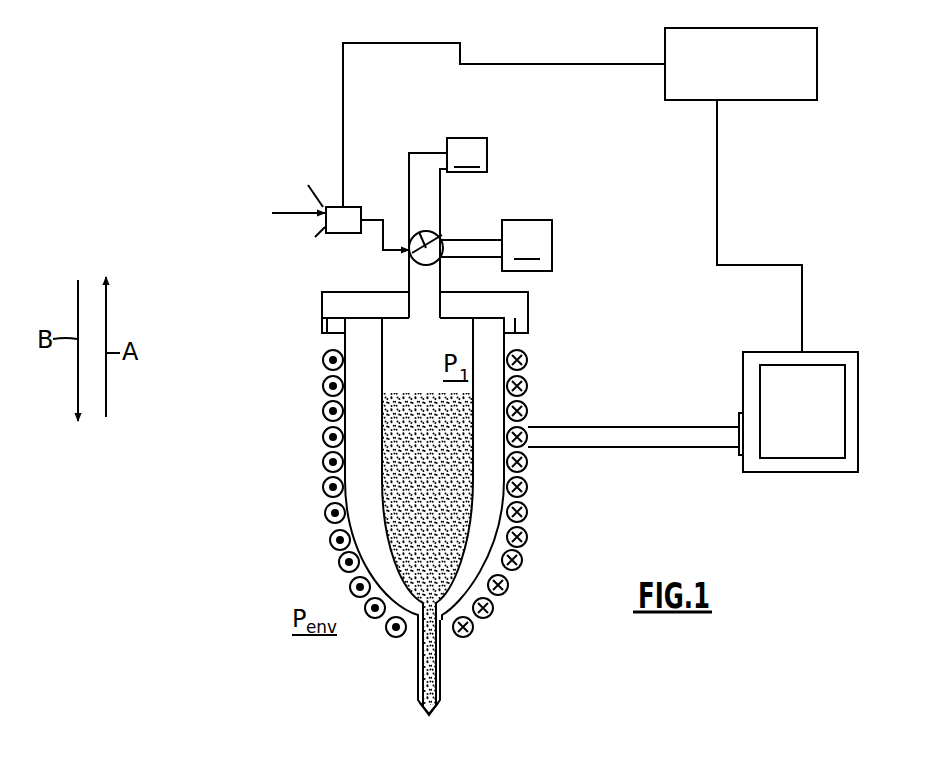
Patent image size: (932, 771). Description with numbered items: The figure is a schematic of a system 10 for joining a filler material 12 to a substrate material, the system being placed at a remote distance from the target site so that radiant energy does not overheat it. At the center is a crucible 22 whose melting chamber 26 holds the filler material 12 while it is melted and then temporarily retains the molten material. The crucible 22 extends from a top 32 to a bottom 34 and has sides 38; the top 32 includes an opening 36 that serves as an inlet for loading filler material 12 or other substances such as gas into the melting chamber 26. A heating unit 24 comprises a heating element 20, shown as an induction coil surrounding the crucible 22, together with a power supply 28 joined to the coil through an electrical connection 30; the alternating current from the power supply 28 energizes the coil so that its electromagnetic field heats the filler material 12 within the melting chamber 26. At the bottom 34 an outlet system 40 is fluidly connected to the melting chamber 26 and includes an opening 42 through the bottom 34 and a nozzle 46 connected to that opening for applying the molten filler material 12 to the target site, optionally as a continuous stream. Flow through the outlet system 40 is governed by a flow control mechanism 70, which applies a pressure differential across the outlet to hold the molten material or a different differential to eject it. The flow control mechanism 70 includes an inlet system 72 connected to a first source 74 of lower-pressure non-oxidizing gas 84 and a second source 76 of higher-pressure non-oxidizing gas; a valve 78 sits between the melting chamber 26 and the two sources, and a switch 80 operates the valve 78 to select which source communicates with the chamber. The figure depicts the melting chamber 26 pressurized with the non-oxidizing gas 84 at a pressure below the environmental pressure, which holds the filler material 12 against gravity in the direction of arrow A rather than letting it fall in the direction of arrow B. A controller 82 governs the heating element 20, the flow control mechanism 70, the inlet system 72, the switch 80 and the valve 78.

The system 10 is at (850, 82).
The filler material 12 is at (403, 540).
The heating element 20 is at (529, 357).
The crucible 22 is at (513, 341).
The heating unit 24 is at (321, 353).
The melting chamber 26 is at (463, 326).
The power supply 28 is at (860, 422).
The electrical connection 30 is at (656, 450).
The top 32 is at (343, 323).
The bottom 34 is at (415, 630).
The opening 36 is at (384, 318).
The side 38 is at (345, 425).
The outlet system 40 is at (445, 675).
The opening 42 is at (439, 636).
The nozzle 46 is at (442, 695).
The flow control mechanism 70 is at (310, 162).
The inlet system 72 is at (382, 187).
The source 74 is at (527, 245).
The source 76 is at (467, 155).
The valve 78 is at (442, 233).
The switch 80 is at (340, 237).
The controller 82 is at (718, 28).
The non-oxidizing gas 84 is at (429, 350).